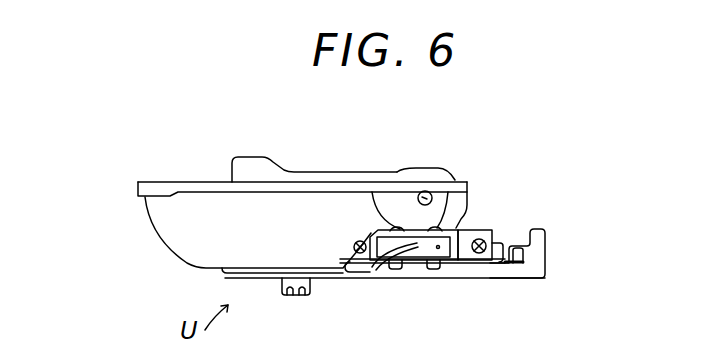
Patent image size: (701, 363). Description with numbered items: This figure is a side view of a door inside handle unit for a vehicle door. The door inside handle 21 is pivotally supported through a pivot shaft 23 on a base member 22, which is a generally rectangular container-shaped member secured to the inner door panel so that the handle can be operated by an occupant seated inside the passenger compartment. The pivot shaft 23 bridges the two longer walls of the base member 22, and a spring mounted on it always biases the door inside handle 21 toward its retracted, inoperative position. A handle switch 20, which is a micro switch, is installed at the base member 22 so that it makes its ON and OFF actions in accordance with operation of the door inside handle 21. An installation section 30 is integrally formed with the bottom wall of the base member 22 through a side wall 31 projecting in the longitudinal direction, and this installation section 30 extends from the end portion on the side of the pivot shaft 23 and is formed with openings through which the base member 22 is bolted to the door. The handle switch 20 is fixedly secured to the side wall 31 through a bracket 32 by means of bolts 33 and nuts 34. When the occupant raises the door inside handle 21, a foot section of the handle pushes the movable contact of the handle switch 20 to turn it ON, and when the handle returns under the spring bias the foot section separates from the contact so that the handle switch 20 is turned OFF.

The handle switch 20 is at (462, 222).
The door inside handle 21 is at (249, 152).
The base member 22 is at (162, 240).
The pivot shaft 23 is at (437, 169).
The installation section 30 is at (515, 275).
The side wall 31 is at (480, 227).
The bracket 32 is at (465, 270).
The bolt 33 is at (370, 172).
The nut 34 is at (422, 277).